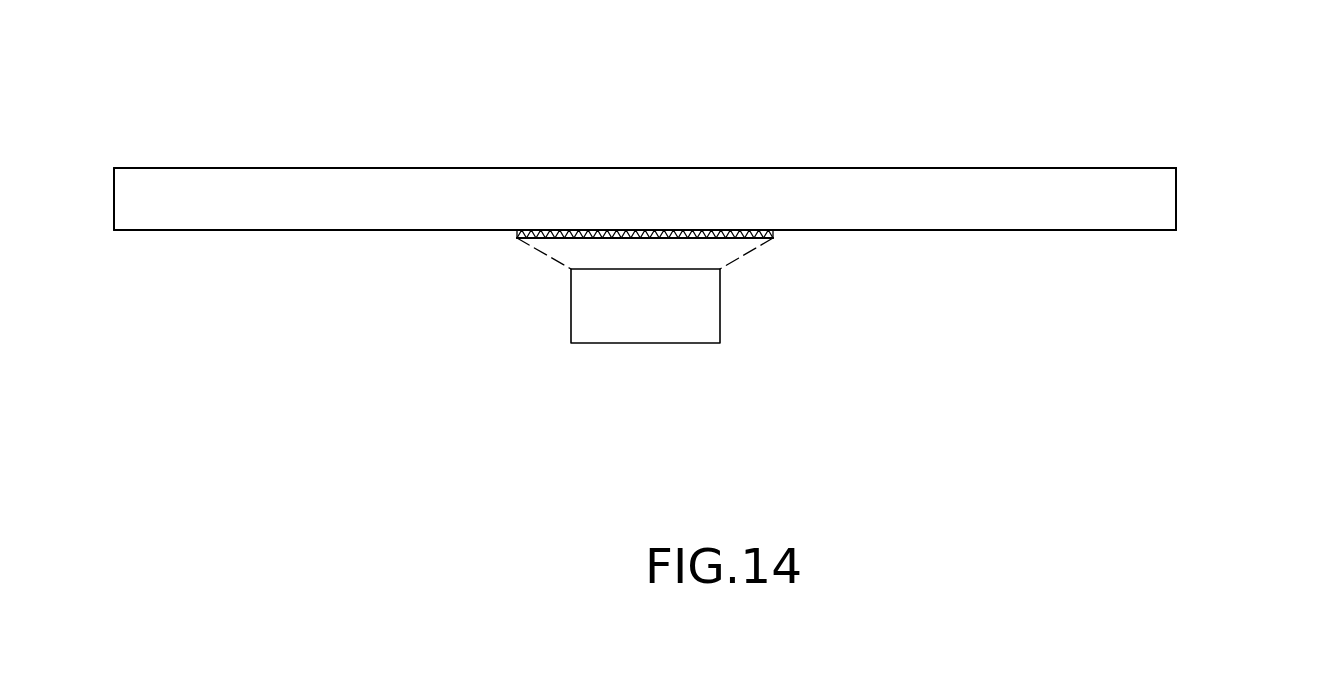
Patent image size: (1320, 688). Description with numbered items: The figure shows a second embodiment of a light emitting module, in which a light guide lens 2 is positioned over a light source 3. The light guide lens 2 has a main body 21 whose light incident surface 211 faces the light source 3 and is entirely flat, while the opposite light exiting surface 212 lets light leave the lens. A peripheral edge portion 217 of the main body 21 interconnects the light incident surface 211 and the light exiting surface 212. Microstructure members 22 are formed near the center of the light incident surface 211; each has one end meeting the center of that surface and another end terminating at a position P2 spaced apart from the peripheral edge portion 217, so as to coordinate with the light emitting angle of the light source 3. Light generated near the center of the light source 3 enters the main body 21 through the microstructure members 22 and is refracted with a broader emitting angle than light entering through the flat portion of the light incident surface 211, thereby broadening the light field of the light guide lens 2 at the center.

The light guide lens 2 is at (706, 172).
The main body 21 is at (1077, 178).
The light exiting surface 212 is at (838, 168).
The light incident surface 211 is at (1061, 231).
The peripheral edge portion 217 is at (1176, 196).
The microstructure members 22 is at (705, 238).
The position P2 is at (773, 237).
The light source 3 is at (580, 310).